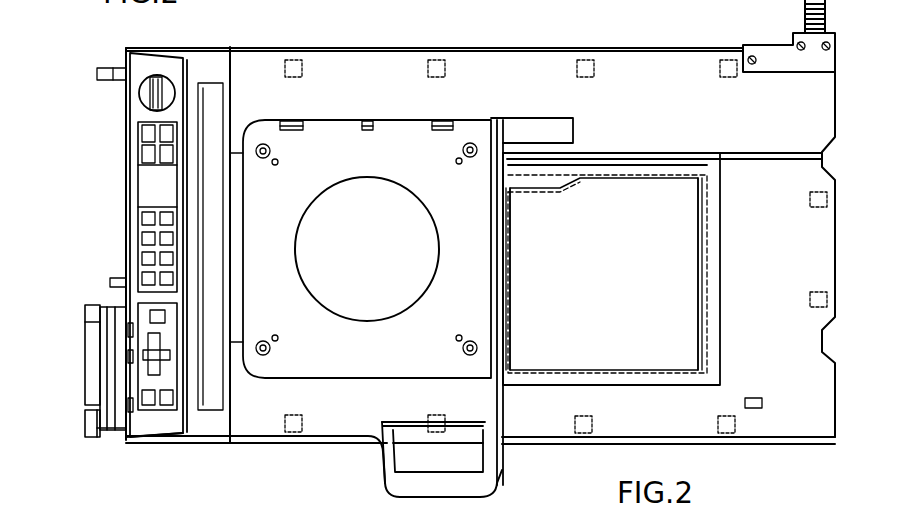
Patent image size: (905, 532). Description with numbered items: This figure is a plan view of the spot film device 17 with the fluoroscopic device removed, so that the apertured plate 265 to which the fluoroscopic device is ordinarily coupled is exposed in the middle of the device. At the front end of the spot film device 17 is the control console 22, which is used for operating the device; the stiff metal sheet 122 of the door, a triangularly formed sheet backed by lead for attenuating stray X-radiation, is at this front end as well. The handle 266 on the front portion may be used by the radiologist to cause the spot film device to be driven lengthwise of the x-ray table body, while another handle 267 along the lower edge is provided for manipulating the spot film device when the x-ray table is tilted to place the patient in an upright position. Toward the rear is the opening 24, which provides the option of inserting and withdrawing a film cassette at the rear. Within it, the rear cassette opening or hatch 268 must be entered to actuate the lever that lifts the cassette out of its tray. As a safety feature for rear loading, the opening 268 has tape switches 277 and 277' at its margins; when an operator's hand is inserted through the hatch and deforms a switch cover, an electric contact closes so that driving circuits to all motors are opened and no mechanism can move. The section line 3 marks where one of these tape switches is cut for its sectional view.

The spot film device 17 is at (585, 45).
The stiff metal sheet 122 is at (116, 117).
The control console 22 is at (142, 248).
The handle 266 is at (85, 377).
The apertured plate 265 is at (338, 119).
The opening 24 is at (727, 224).
The opening 268 is at (598, 197).
The tape switch 277 is at (662, 274).
The tape switch 277' is at (539, 279).
The handle 267 is at (502, 478).
The section line 3- 3 is at (670, 240).